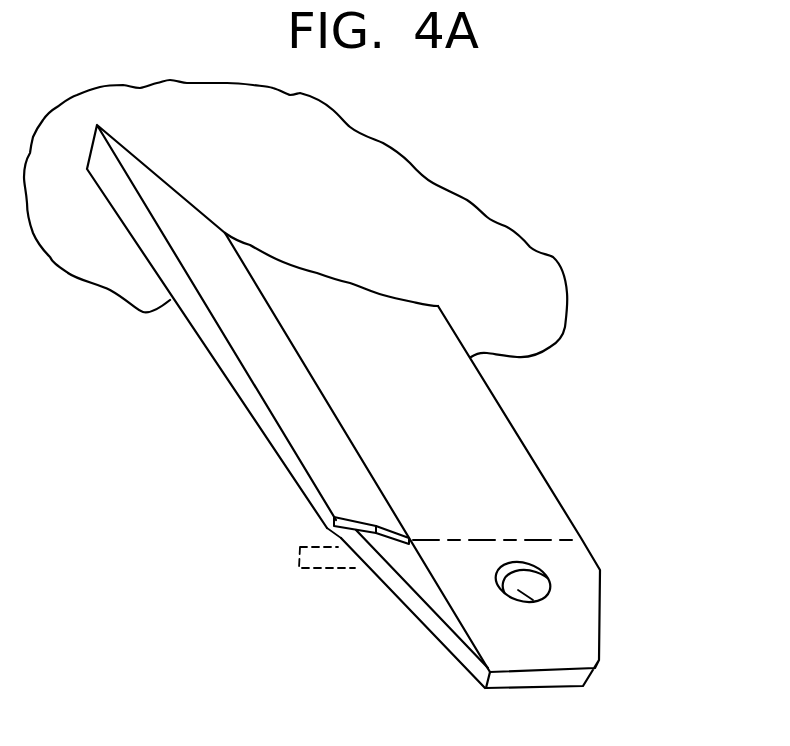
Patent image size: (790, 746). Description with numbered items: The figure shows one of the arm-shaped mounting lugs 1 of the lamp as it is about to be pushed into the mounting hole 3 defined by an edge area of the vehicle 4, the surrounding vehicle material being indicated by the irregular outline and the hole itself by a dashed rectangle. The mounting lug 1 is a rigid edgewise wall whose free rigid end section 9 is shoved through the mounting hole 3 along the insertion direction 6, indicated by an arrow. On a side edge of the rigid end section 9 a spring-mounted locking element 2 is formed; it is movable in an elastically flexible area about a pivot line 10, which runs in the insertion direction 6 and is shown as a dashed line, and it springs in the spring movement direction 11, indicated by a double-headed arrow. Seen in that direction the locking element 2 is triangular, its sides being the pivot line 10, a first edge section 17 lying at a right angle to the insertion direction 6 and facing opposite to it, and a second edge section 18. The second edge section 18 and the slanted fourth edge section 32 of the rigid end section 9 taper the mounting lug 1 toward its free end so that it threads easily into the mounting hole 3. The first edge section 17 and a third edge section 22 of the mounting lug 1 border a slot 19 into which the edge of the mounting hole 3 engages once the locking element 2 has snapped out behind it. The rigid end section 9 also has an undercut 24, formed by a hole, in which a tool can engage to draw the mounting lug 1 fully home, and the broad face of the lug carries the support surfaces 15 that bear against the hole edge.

The mounting lug 1 is at (471, 357).
The locking element 2 is at (413, 571).
The mounting hole 3 is at (302, 551).
The vehicle 4 is at (350, 147).
The insertion direction 6 is at (158, 462).
The rigid end section 9 is at (572, 617).
The pivot line 10 is at (412, 543).
The spring movement direction 11 is at (347, 593).
The support surfaces 15 is at (435, 468).
The first edge section 17 is at (377, 590).
The second edge section 18 is at (403, 603).
The slot 19 is at (325, 527).
The third edge section 22 is at (338, 519).
The undercut 24 is at (540, 598).
The fourth edge section 32 is at (598, 657).